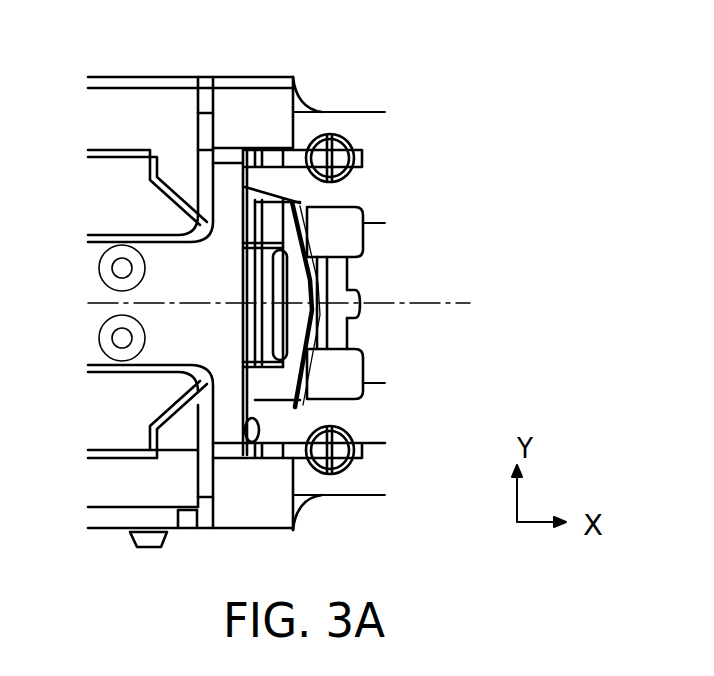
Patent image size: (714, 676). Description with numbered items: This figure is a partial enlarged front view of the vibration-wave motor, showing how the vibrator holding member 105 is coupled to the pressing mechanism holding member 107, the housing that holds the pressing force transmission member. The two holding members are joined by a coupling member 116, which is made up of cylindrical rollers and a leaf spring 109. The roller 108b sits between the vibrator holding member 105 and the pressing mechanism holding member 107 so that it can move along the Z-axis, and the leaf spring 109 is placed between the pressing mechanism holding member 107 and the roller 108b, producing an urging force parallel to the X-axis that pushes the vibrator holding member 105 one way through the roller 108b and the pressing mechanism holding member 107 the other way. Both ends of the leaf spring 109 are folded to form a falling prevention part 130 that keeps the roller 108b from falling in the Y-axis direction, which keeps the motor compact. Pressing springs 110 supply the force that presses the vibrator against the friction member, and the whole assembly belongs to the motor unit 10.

The connector housing 10 is at (335, 468).
The pressing spring 110 is at (370, 110).
The falling prevention part 130 is at (345, 165).
The pressing mechanism holding member 107 is at (307, 250).
The leaf spring 109 is at (365, 245).
The roller 108b is at (290, 305).
The coupling member 116 is at (417, 278).
The vibrator holding member 105 is at (273, 350).